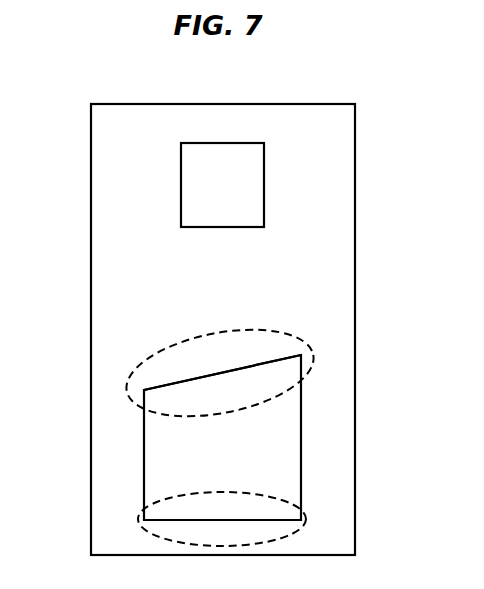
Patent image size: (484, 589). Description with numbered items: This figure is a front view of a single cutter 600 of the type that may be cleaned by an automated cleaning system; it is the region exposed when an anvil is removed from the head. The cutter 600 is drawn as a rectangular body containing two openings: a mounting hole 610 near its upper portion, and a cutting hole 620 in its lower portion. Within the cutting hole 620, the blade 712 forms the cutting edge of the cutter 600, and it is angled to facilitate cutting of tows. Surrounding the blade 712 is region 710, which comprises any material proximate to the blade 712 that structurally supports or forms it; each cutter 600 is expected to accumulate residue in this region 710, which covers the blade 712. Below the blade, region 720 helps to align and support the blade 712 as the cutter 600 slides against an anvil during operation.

The cutter 600 is at (355, 240).
The mounting hole 610 is at (265, 172).
The cutting hole 620 is at (166, 463).
The region 710 is at (197, 338).
The blade 712 is at (265, 375).
The region 720 is at (223, 492).